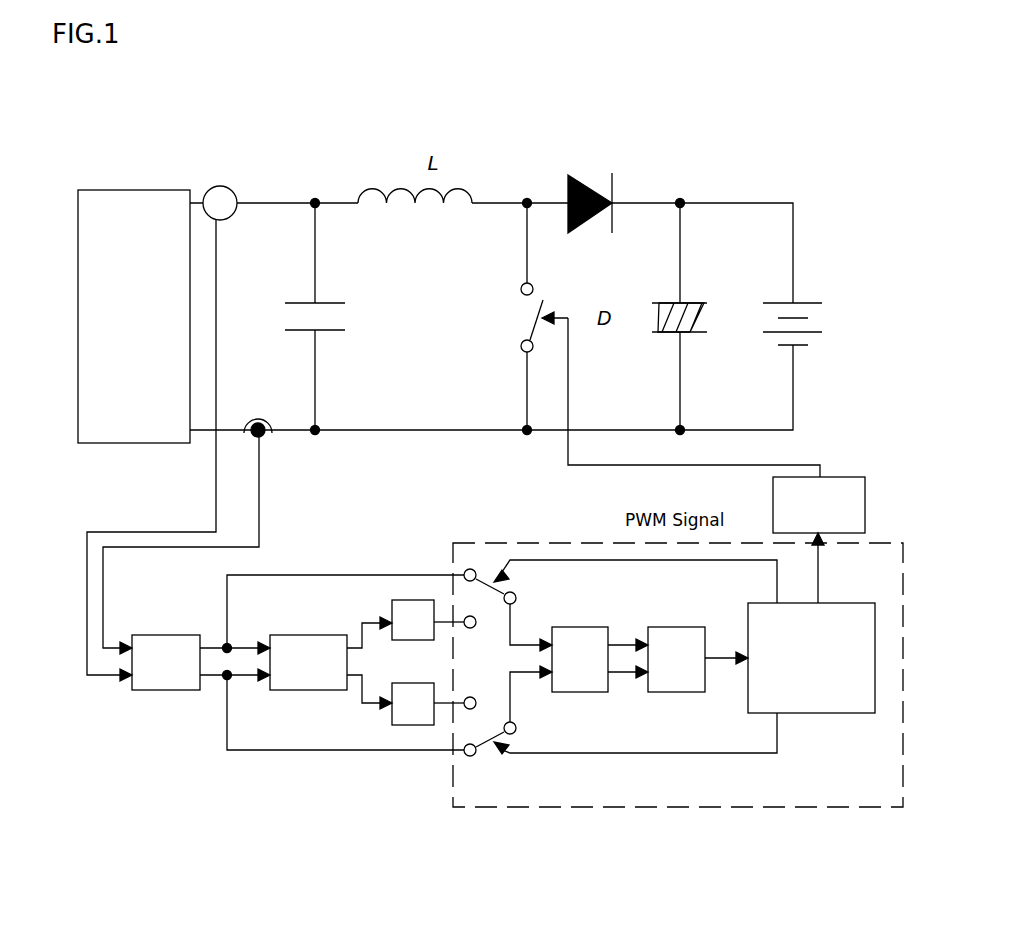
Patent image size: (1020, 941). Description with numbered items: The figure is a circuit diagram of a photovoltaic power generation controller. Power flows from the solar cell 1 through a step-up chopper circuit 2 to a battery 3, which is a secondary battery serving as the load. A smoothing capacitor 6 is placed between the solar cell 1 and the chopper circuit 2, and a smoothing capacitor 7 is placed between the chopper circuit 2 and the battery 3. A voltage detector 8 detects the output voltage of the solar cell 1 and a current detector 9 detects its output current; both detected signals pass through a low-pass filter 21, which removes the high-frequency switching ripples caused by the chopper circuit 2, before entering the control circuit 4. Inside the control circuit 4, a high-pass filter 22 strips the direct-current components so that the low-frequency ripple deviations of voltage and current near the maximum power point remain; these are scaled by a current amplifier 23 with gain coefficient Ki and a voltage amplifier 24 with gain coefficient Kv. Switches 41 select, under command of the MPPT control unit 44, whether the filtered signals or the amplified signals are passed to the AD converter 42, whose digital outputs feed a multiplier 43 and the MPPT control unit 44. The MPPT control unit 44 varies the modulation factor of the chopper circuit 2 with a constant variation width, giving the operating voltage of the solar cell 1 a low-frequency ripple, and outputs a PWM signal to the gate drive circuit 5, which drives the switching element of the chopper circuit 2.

The solar cell 1 is at (160, 190).
The step-up chopper circuit 2 is at (516, 250).
The battery 3 is at (806, 303).
The control circuit 4 is at (389, 670).
The gate drive circuit 5 is at (843, 477).
The smoothing capacitor 6 is at (325, 303).
The smoothing capacitor 7 is at (690, 303).
The voltage detector 8 is at (228, 188).
The current detector 9 is at (265, 418).
The low-pass filter 21 is at (155, 635).
The high-pass filter 22 is at (290, 635).
The current amplifier 23 is at (402, 600).
The voltage amplifier 24 is at (404, 725).
The switches 41 is at (490, 590).
The AD converter 42 is at (585, 627).
The multiplier 43 is at (678, 627).
The MPPT control unit 44 is at (818, 713).